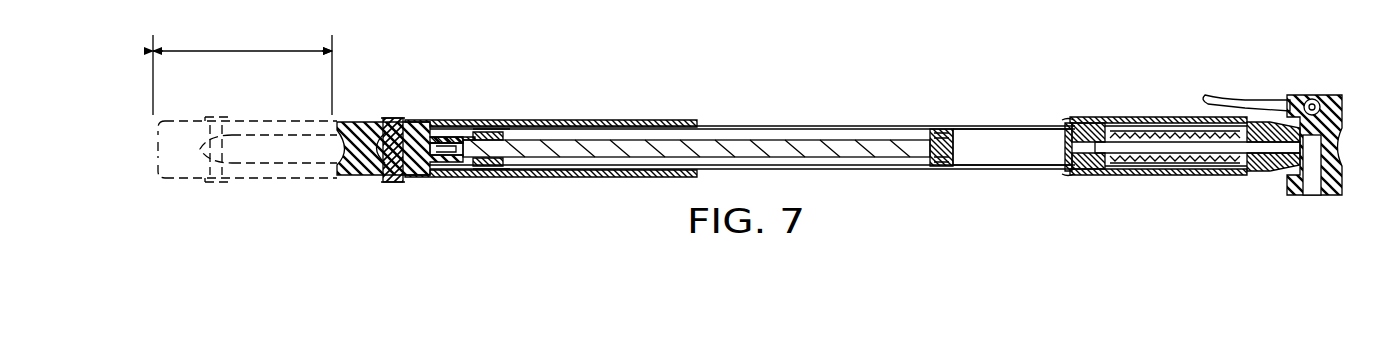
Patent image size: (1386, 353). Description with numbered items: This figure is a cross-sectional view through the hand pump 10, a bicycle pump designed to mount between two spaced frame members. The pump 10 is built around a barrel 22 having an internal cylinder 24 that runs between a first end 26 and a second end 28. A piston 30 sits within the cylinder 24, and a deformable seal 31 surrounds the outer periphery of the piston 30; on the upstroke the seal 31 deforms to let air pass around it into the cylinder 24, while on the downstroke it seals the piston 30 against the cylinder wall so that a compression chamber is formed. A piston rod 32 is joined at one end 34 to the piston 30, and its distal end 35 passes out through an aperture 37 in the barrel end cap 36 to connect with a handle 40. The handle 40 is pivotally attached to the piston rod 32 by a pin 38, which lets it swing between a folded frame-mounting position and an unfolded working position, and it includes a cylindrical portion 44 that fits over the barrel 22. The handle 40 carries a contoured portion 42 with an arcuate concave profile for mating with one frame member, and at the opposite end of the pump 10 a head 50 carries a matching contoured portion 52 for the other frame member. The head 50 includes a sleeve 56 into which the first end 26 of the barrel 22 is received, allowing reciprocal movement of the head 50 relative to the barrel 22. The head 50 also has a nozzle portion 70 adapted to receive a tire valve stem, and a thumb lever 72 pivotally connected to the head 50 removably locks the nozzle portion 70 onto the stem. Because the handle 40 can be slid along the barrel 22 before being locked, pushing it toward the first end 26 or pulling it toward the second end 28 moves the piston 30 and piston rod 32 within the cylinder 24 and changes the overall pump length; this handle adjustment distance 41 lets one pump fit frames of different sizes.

The pump 10 is at (886, 106).
The barrel 22 is at (793, 125).
The internal cylinder 24 is at (983, 136).
The first end 26 is at (1063, 128).
The second end 28 is at (494, 128).
The piston 30 is at (955, 150).
The deformable seal 31 is at (940, 128).
The piston rod 32 is at (670, 149).
The one end of piston rod 34 is at (928, 150).
The distal end of piston rod 35 is at (443, 152).
The barrel end cap 36 is at (503, 170).
The aperture 37 is at (463, 138).
The pin 38 is at (389, 184).
The handle 40 is at (428, 88).
The handle adjustment distance 41 is at (225, 50).
The contoured portion of handle 42 is at (340, 152).
The cylindrical portion 44 is at (592, 119).
The head 50 is at (1236, 79).
The contoured portion of head 52 is at (1343, 146).
The sleeve 56 is at (1115, 118).
The nozzle portion 70 is at (1298, 92).
The thumb lever 72 is at (1204, 97).